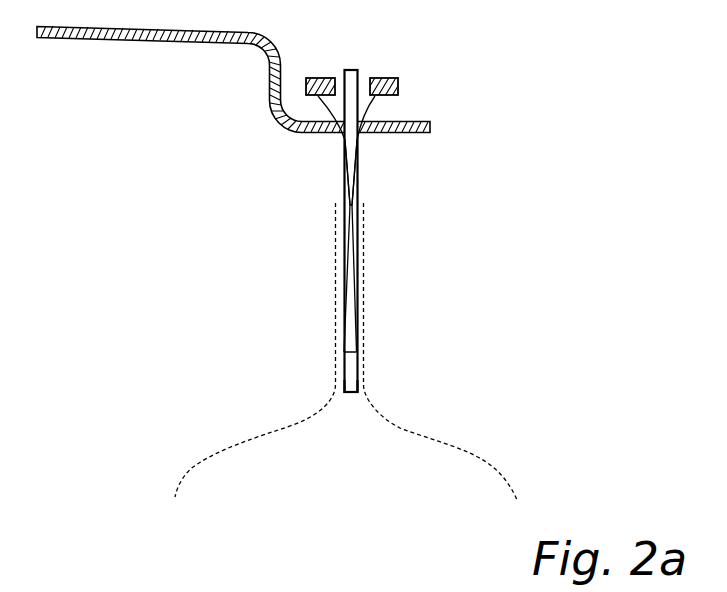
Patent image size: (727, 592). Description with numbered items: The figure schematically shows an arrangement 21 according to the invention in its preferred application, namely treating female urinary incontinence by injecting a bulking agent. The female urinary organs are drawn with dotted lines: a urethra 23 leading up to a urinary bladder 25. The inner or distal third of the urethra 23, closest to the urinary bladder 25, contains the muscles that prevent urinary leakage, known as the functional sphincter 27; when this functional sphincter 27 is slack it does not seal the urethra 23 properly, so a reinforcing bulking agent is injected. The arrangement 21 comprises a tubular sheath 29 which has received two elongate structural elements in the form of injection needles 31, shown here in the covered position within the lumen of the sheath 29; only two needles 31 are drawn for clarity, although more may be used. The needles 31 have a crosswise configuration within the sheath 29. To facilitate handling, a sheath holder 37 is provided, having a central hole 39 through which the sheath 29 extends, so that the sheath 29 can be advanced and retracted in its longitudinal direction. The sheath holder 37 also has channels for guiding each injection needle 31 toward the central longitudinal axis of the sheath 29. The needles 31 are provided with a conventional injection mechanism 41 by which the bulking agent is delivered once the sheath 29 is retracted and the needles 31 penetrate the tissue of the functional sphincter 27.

The arrangement 21 is at (476, 62).
The urethra 23 is at (363, 272).
The urinary bladder 25 is at (470, 453).
The functional sphincter 27 is at (335, 376).
The tubular sheath 29 is at (360, 188).
The injection needles 31 is at (373, 97).
The sheath holder 37 is at (163, 38).
The central hole 39 is at (343, 143).
The injection mechanism 41 is at (322, 78).